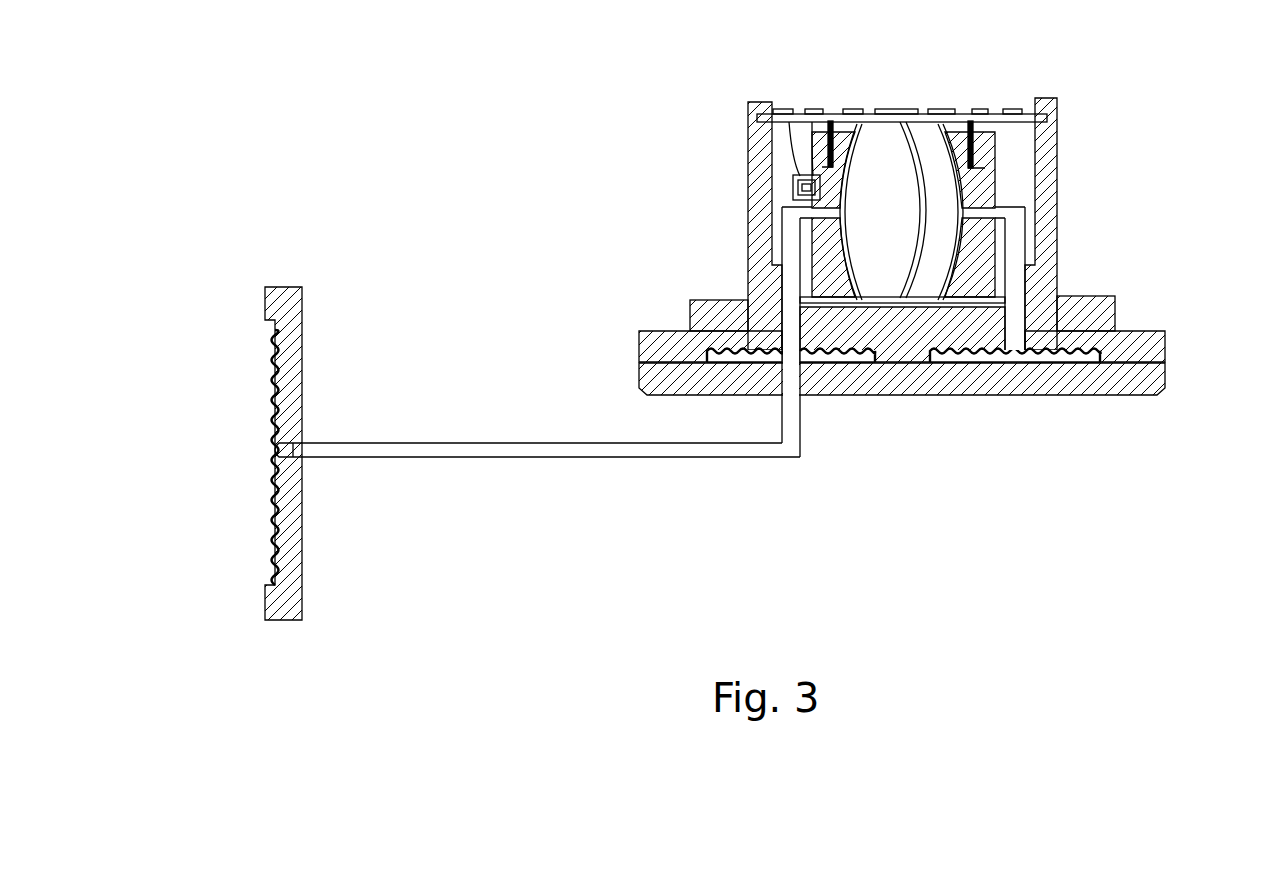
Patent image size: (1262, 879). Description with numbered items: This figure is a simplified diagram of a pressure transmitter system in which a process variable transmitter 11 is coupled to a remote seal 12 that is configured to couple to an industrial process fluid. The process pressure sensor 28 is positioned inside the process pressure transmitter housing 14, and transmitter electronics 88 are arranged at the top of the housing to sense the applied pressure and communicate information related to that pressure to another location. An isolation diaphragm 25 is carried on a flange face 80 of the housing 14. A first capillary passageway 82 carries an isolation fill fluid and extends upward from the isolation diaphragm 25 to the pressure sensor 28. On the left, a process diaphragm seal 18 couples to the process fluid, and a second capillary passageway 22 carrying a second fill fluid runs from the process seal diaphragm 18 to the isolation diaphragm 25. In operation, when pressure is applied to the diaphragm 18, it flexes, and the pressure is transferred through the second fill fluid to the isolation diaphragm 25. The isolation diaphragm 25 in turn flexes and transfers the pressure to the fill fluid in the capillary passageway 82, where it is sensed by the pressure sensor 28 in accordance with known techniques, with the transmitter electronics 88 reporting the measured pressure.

The process variable transmitter 11 is at (599, 158).
The remote seal 12 is at (358, 262).
The process pressure transmitter housing 14 is at (1050, 113).
The process diaphragm seal 18 is at (268, 375).
The second capillary passageway 22 is at (567, 460).
The isolation diaphragm 25 is at (833, 360).
The process pressure sensor 28 is at (993, 178).
The flange face 80 is at (1138, 362).
The first capillary passageway 82 is at (792, 255).
The transmitter electronics 88 is at (905, 108).